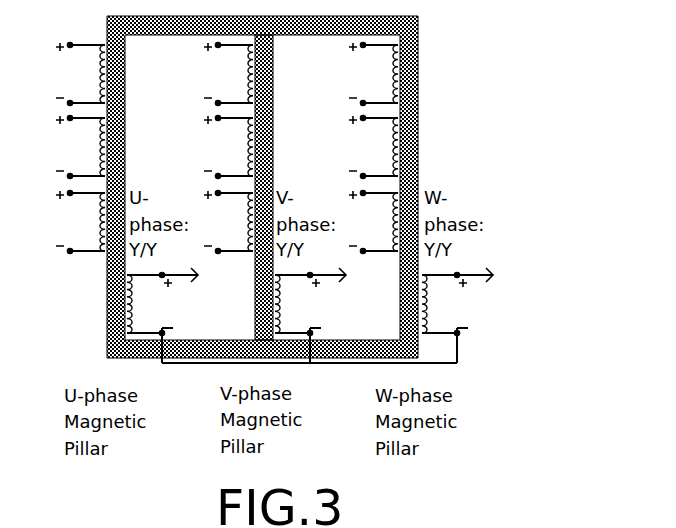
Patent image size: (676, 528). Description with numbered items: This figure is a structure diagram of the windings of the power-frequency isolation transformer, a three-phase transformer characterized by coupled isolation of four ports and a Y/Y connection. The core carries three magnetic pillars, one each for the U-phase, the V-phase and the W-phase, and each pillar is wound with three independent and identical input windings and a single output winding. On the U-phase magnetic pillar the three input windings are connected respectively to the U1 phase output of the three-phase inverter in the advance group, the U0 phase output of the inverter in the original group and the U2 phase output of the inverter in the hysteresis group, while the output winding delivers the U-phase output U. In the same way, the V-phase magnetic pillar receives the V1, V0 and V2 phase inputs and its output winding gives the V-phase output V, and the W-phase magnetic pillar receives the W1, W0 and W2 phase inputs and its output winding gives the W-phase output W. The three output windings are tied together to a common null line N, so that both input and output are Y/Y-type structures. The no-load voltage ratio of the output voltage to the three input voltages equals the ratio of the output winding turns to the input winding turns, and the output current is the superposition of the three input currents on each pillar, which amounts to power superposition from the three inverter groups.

The U1 phase input U1 is at (74, 74).
The U0 phase input U0 is at (74, 147).
The U2 phase input U2 is at (74, 222).
The V1 phase input V1 is at (223, 74).
The V0 phase input V0 is at (223, 147).
The V2 phase input V2 is at (225, 222).
The W1 phase input W1 is at (366, 74).
The W0 phase input W0 is at (366, 147).
The W2 phase input W2 is at (367, 222).
The U-phase output U is at (162, 315).
The V-phase output V is at (310, 315).
The W-phase output W is at (457, 315).
The null line N is at (359, 352).